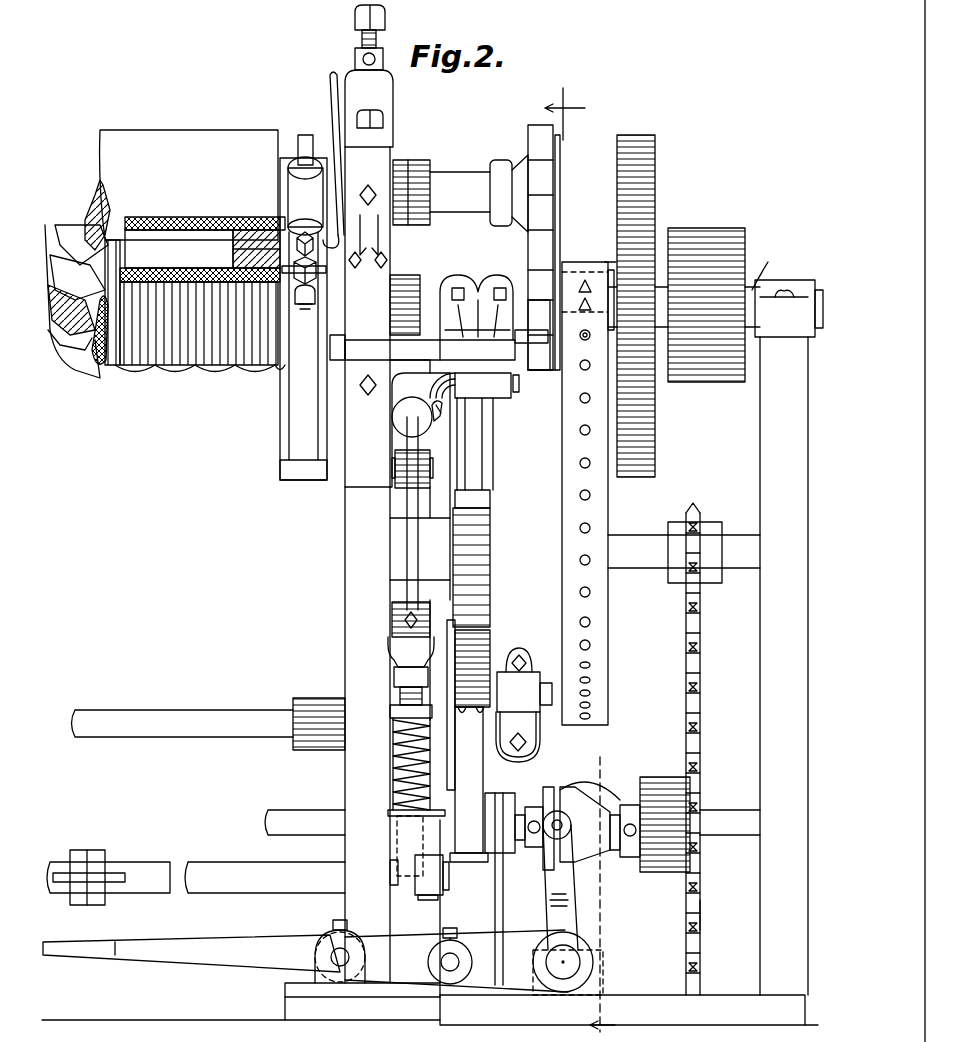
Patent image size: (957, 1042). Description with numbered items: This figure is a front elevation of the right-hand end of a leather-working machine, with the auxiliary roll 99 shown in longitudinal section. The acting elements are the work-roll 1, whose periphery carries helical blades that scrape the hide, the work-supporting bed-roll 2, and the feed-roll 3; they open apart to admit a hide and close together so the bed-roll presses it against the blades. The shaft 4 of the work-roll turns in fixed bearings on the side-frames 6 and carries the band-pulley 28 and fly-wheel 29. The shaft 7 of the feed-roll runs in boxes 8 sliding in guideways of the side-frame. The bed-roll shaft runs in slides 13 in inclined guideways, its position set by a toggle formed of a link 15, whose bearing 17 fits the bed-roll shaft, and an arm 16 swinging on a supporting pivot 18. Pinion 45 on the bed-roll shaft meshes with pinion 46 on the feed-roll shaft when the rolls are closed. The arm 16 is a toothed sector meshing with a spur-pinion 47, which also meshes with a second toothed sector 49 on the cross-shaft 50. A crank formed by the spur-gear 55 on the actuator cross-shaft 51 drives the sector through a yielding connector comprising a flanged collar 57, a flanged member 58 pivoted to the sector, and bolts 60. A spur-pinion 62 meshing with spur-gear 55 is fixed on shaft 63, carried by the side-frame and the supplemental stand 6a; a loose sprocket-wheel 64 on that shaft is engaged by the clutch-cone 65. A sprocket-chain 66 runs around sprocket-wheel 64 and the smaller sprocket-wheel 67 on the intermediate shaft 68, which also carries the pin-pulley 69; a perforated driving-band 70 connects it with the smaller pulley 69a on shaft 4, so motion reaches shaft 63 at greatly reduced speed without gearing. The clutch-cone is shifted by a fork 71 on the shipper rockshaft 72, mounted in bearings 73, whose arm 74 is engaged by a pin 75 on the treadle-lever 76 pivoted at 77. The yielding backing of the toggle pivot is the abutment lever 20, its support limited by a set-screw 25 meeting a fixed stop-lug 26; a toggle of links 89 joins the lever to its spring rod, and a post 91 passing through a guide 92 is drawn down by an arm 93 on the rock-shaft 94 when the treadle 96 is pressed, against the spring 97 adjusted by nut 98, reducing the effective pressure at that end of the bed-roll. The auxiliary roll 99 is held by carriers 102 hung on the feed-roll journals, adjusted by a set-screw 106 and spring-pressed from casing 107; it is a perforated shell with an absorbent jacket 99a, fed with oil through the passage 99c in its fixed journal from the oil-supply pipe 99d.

The work-roll 1 is at (78, 370).
The bed-roll 2 is at (110, 360).
The feed-roll 3 is at (95, 185).
The shaft of the work-roll 4 is at (684, 553).
The side-frames 6 is at (352, 592).
The supplemental frame or stand 6a is at (762, 652).
The shaft of the feed-roll 7 is at (458, 182).
The boxes 8 is at (398, 172).
The slides 13 is at (404, 278).
The link 15 is at (472, 335).
The arm 16 is at (487, 465).
The bearing 17 is at (468, 288).
The supporting pivot 18 is at (518, 393).
The lever 20 is at (404, 508).
The set-screw 25 is at (438, 424).
The stop-lug 26 is at (455, 376).
The band-pulley 28 is at (690, 228).
The fly-wheel 29 is at (660, 162).
The pinion 45 is at (540, 272).
The pinion 46 is at (535, 142).
The spur-pinion 47 is at (486, 594).
The toothed sector 49 is at (490, 650).
The cross-shaft 50 is at (292, 812).
The cross-shaft 51 is at (165, 715).
The spur-gear 55 is at (455, 762).
The flanged collar 57 is at (528, 765).
The flanged member 58 is at (535, 676).
The bolts 60 is at (520, 695).
The spur-pinion 62 is at (468, 864).
The shaft 63 is at (725, 818).
The sprocket-wheel 64 is at (703, 922).
The clutch-cone 65 is at (600, 800).
The sprocket-chain 66 is at (685, 628).
The sprocket-wheel 67 is at (705, 518).
The intermediate shaft 68 is at (636, 540).
The pulley 69 is at (560, 516).
The pulley 69a is at (610, 262).
The driving-band 70 is at (573, 378).
The fork 71 is at (575, 868).
The shipper rockshaft 72 is at (568, 972).
The bearings 73 is at (598, 968).
The arm 74 is at (508, 905).
The pin 75 is at (428, 962).
The treadle-lever 76 is at (194, 957).
The pivotal bearing 77 is at (328, 980).
The links 89 is at (398, 634).
The post 91 is at (398, 692).
The guide 92 is at (398, 812).
The arm 93 is at (425, 900).
The rock-shaft 94 is at (236, 890).
The treadle 96 is at (108, 875).
The expanding spring 97 is at (398, 762).
The nut 98 is at (400, 714).
The auxiliary roll 99 is at (115, 225).
The jacket 99a is at (262, 215).
The longitudinal passage 99c is at (233, 245).
The oil-supply pipe 99d is at (326, 102).
The carriers 102 is at (282, 412).
The set-screw 106 is at (318, 278).
The casing 107 is at (305, 162).